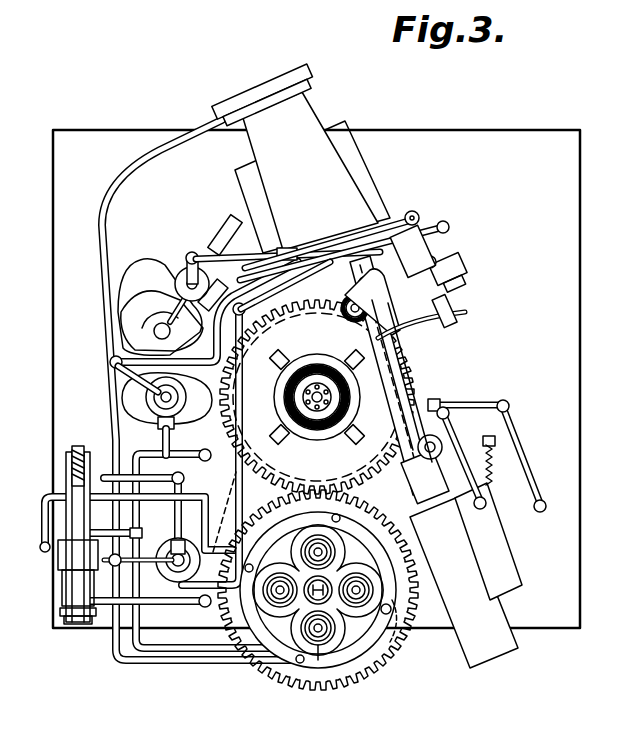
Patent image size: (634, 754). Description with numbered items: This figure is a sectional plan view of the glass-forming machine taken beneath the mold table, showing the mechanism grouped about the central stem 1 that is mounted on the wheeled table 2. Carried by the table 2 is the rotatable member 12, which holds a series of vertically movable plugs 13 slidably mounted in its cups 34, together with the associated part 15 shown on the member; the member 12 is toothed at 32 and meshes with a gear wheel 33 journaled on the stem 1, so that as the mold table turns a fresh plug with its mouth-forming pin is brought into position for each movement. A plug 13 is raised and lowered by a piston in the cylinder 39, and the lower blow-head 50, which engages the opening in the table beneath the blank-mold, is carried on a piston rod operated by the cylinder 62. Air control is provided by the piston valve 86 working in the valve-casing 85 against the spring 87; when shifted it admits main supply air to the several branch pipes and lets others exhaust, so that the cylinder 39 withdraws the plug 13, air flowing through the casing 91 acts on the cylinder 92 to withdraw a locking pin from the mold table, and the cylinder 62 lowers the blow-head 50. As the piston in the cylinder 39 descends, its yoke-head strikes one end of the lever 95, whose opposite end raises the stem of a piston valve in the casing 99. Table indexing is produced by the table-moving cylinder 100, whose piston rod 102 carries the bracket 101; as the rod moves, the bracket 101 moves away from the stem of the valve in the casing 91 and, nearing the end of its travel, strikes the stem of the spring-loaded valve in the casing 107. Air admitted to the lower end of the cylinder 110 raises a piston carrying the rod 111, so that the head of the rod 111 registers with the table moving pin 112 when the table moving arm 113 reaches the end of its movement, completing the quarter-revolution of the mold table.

The central stem 1 is at (340, 434).
The table 2 is at (566, 190).
The rotatable member 12 is at (318, 600).
The plug 13 is at (280, 600).
The roller 15 is at (356, 590).
The teeth 32 is at (386, 648).
The gear wheel 33 is at (414, 383).
The cup 34 is at (340, 640).
The cylinder 39 is at (304, 540).
The lower blow-head 50 is at (147, 436).
The cylinder 62 is at (146, 397).
The valve-casing 85 is at (70, 578).
The piston valve 86 is at (60, 562).
The spring 87 is at (66, 470).
The casing 91 is at (462, 274).
The cylinder 92 is at (183, 268).
The lever 95 is at (212, 550).
The casing 99 is at (174, 568).
The table-moving cylinder 100 is at (301, 162).
The bracket 101 is at (462, 319).
The piston rod 102 is at (412, 363).
The casing 107 is at (522, 538).
The cylinder 110 is at (408, 478).
The rod 111 is at (445, 446).
The table moving pin 112 is at (386, 290).
The table moving arm 113 is at (318, 338).